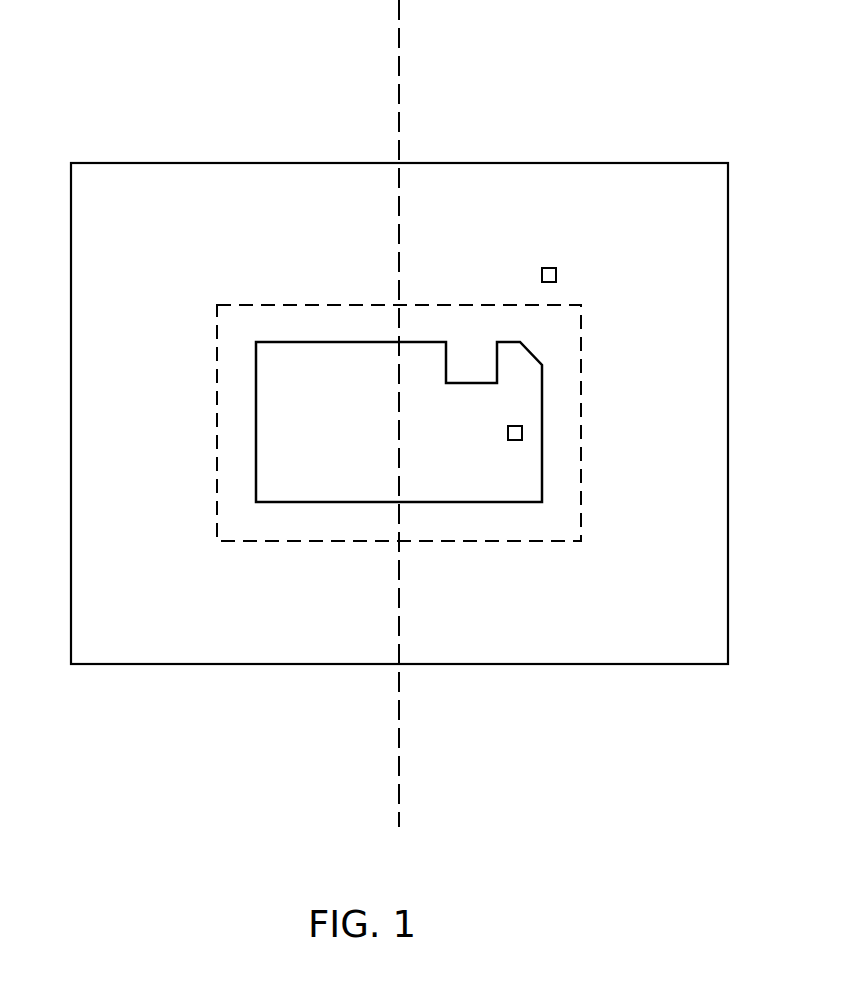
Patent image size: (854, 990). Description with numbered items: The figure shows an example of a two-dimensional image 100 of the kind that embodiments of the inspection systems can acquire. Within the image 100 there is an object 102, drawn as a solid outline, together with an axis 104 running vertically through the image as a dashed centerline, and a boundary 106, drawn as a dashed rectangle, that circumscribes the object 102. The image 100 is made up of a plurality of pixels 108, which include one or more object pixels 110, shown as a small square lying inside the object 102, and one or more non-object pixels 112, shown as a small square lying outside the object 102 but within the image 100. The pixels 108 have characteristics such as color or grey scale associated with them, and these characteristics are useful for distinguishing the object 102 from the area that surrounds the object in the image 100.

The two-dimensional image 100 is at (604, 132).
The object 102 is at (305, 512).
The axis 104 is at (400, 742).
The boundary 106 is at (315, 303).
The pixels 108 is at (572, 277).
The object pixels 110 is at (508, 433).
The non-object pixels 112 is at (552, 267).